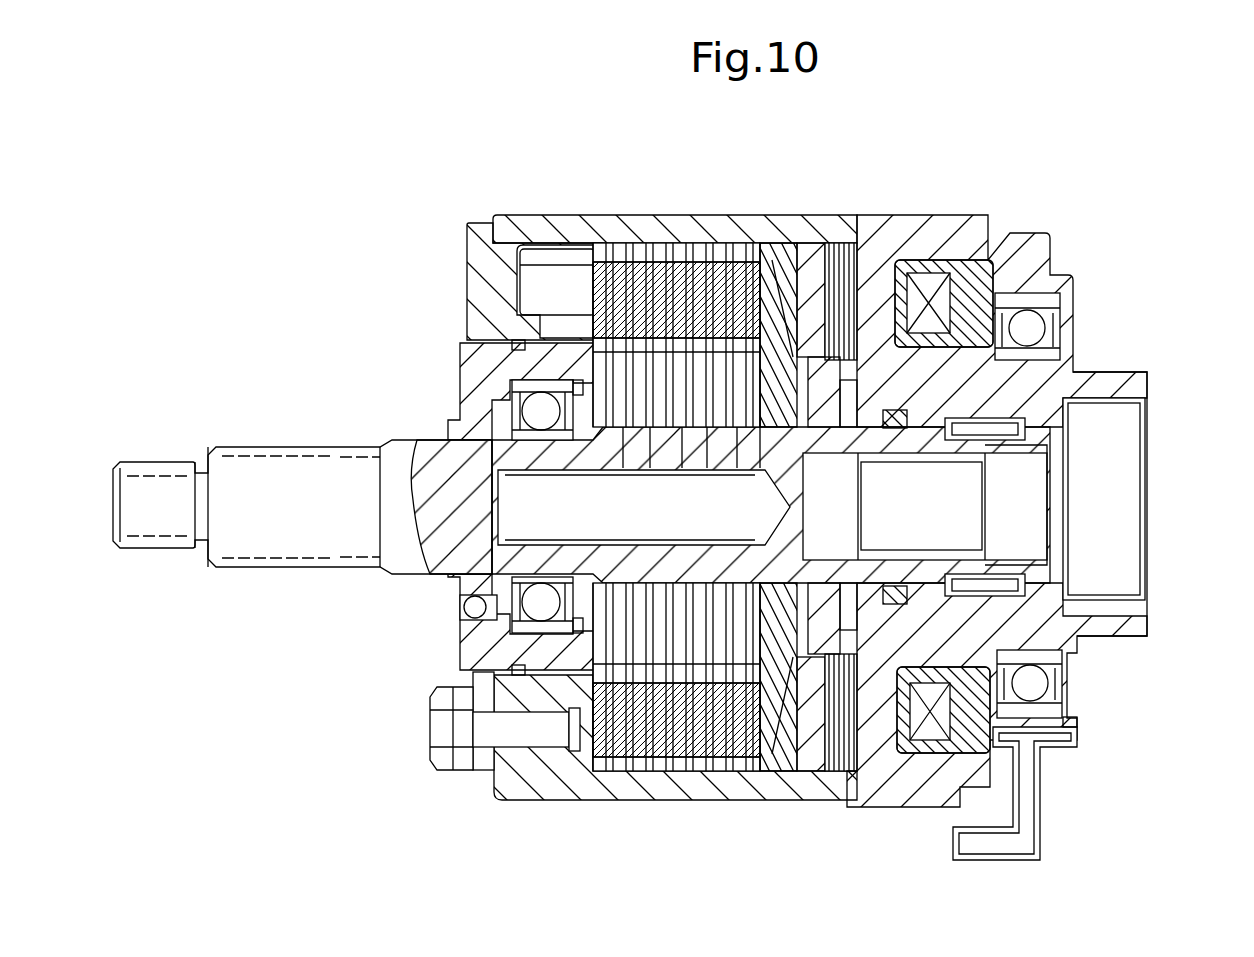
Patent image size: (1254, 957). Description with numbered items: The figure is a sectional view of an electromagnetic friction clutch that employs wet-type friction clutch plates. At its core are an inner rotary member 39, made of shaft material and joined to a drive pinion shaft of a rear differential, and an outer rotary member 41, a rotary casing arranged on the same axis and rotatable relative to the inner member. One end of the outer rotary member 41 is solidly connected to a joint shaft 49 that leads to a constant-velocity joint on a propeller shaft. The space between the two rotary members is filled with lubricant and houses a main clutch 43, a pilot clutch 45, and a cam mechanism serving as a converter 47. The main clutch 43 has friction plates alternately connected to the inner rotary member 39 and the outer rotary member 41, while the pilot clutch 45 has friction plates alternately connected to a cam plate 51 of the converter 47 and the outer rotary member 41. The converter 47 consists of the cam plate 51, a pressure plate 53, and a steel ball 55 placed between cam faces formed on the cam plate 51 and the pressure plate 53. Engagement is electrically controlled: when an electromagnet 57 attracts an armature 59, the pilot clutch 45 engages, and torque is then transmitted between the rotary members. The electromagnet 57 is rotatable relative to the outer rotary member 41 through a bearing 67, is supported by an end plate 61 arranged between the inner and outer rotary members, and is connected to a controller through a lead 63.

The inner rotary member 39 is at (1047, 432).
The outer rotary member 41 is at (520, 212).
The main clutch 43 is at (672, 227).
The pilot clutch 45 is at (843, 222).
The converter 47 is at (770, 760).
The joint shaft 49 is at (340, 467).
The cam plate 51 is at (825, 760).
The pressure plate 53 is at (770, 250).
The steel ball 55 is at (790, 745).
The electromagnet 57 is at (940, 300).
The armature 59 is at (820, 250).
The end plate 61 is at (1060, 388).
The lead 63 is at (1025, 812).
The bearing 67 is at (1060, 340).